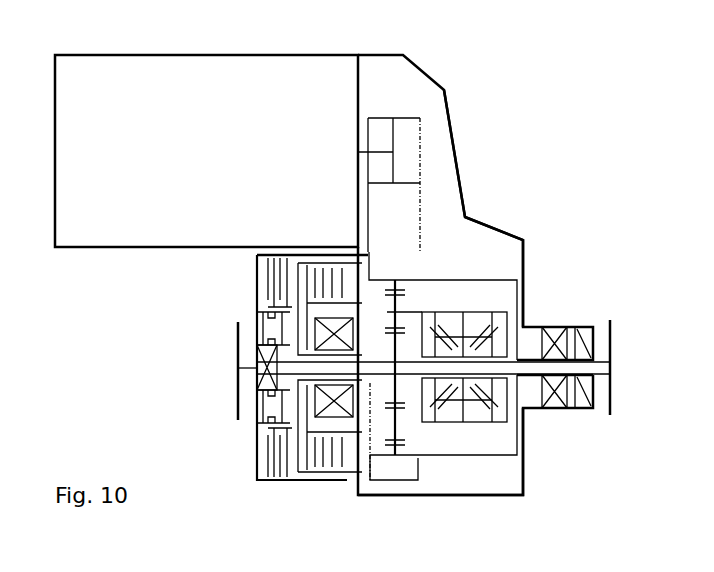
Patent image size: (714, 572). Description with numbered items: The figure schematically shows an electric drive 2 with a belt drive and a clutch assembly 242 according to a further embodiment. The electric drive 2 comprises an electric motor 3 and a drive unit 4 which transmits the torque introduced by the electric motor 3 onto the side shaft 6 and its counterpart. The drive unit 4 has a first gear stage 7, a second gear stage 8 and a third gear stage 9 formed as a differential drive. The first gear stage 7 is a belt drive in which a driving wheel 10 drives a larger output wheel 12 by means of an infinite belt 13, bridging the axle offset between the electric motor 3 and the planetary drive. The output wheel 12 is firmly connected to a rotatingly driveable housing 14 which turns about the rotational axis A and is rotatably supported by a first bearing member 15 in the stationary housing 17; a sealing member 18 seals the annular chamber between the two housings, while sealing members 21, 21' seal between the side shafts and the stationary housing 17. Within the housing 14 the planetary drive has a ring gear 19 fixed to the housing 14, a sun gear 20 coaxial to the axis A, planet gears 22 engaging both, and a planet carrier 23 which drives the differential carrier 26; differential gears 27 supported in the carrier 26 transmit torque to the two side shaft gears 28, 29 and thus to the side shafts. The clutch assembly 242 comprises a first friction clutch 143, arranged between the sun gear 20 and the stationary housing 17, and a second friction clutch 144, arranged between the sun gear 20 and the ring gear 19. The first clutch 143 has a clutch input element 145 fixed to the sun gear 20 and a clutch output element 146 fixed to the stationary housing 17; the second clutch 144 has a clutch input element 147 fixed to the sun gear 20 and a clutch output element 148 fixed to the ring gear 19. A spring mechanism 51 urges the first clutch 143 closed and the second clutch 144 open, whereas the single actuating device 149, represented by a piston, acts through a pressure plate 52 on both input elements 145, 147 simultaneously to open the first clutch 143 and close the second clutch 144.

The electric drive 2 is at (547, 102).
The electric motor 3 is at (212, 164).
The drive unit 4 is at (443, 79).
The side shaft 6 is at (248, 367).
The first gear stage 7 is at (402, 102).
The second gear stage 8 is at (410, 469).
The third gear stage 9 is at (509, 440).
The driving wheel 10 is at (413, 115).
The output wheel 12 is at (412, 252).
The infinite belt 13 is at (407, 203).
The rotatingly driveable housing 14 is at (488, 280).
The first bearing member 15 is at (577, 361).
The stationary housing 17 is at (455, 145).
The sealing member 18 is at (541, 357).
The ring gear 19 is at (400, 290).
The sun gear 20 is at (380, 462).
The sealing member 21 is at (565, 387).
The sealing member 21' is at (230, 368).
The planet gear 22 is at (400, 300).
The planet carrier 23 is at (413, 422).
The differential carrier 26 is at (497, 312).
The differential gear 27 is at (475, 400).
The side shaft gear 28 is at (510, 393).
The side shaft gear 29 is at (442, 395).
The spring mechanism 51 is at (268, 395).
The pressure plate 52 is at (262, 405).
The first friction clutch 143 is at (265, 490).
The second friction clutch 144 is at (333, 490).
The clutch input element 145 is at (252, 302).
The clutch output element 146 is at (258, 258).
The clutch input element 147 is at (320, 260).
The clutch output element 148 is at (338, 270).
The actuating device 149 is at (262, 420).
The clutch assembly 242 is at (303, 490).
The rotational axis A is at (472, 355).